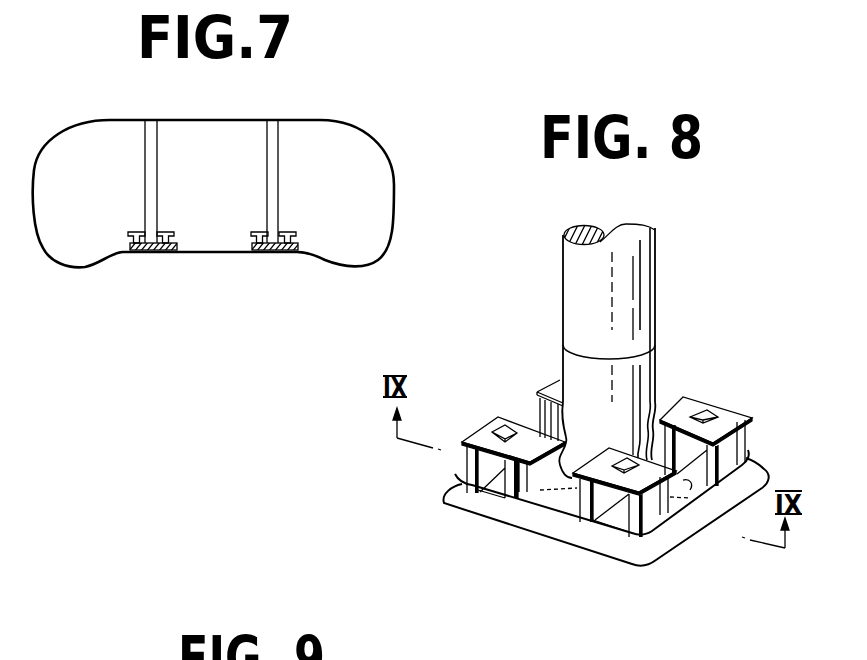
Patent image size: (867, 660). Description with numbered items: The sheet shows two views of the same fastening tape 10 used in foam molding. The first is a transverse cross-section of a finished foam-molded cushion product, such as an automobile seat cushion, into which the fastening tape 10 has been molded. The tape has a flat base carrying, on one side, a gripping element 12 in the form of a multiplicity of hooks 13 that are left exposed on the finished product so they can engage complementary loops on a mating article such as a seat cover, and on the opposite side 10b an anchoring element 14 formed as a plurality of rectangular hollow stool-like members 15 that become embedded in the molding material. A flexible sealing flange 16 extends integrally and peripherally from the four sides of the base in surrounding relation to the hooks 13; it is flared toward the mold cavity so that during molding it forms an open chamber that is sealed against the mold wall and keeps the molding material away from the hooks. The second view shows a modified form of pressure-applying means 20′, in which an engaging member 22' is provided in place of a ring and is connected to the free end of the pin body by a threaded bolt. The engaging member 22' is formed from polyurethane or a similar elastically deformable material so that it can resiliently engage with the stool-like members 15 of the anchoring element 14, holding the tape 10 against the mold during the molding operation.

In FIG. 7, the fastening tape 10 is at (258, 252).
In FIG. 8, the fastening tape 10 is at (584, 553).
In FIG. 8, the opposite surface or side 10b is at (687, 490).
In FIG. 7, the gripping element 12 is at (296, 278).
In FIG. 7, the hooks 13 is at (283, 252).
In FIG. 7, the anchoring element 14 is at (135, 273).
In FIG. 8, the anchoring element 14 is at (601, 445).
In FIG. 7, the rectangular hollow stool-like members 15 is at (138, 233).
In FIG. 8, the rectangular hollow stool-like members 15 is at (483, 418).
In FIG. 8, the flexible sealing flange 16 is at (513, 524).
In FIG. 8, the pressure-applying means 20′ is at (640, 273).
In FIG. 8, the engaging member 22' is at (643, 404).